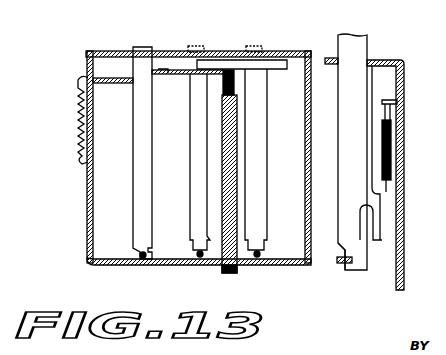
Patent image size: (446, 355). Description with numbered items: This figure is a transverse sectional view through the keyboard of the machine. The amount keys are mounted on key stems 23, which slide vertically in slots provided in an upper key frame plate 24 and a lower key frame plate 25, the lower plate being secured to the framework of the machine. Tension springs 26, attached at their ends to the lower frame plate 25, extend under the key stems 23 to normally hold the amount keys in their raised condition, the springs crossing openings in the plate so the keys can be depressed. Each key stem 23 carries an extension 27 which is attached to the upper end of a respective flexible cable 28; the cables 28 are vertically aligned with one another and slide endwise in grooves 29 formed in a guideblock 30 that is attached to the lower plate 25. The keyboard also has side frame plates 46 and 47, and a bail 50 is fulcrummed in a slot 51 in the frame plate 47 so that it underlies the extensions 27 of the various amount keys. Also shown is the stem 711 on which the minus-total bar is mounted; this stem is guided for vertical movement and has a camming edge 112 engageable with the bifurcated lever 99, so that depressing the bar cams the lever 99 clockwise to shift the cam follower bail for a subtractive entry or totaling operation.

The key stem 23 is at (140, 193).
The upper key frame plate 24 is at (130, 51).
The lower key frame plate 25 is at (141, 266).
The tension spring 26 is at (157, 254).
The extension 27 is at (213, 52).
The flexible cable 28 is at (236, 78).
The groove 29 is at (238, 128).
The guideblock 30 is at (222, 270).
The side frame plate 46 is at (313, 152).
The side frame plate 47 is at (87, 245).
The bail 50 is at (175, 78).
The slot 51 is at (92, 82).
The bifurcated lever 99 is at (341, 266).
The camming edge 112 is at (337, 258).
The stem 711 is at (366, 44).